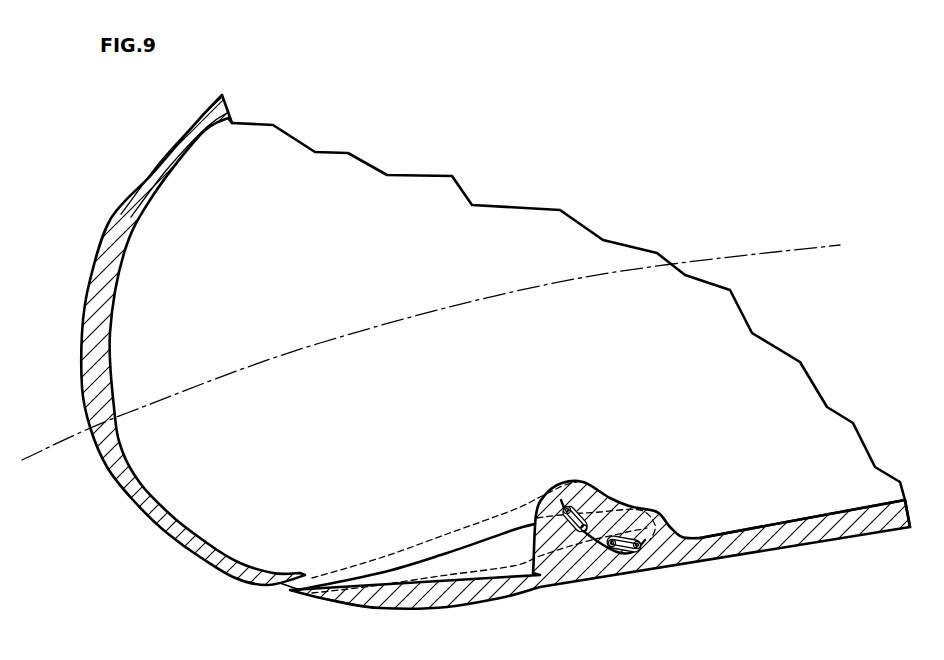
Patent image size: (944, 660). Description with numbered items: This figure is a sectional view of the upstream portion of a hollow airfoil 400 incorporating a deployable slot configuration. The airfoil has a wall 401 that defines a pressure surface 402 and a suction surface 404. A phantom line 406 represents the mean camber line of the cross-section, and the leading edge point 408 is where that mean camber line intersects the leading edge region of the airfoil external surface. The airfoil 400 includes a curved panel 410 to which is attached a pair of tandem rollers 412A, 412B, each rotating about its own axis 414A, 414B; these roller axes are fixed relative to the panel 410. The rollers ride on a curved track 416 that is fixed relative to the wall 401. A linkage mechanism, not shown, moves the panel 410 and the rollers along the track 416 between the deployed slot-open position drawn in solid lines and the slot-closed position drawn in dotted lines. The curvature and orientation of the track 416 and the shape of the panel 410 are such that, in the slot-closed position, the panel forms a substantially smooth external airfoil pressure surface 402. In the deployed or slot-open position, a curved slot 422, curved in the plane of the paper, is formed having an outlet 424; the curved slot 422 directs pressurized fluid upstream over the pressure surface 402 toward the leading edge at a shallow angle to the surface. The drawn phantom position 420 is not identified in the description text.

The hollow airfoil 400 is at (97, 200).
The wall 401 is at (857, 527).
The pressure surface 402 is at (800, 550).
The suction surface 404 is at (203, 108).
The phantom line 406 is at (448, 304).
The leading edge point 408 is at (90, 430).
The curved panel 410 is at (505, 555).
The tandem roller 412A is at (612, 553).
The tandem roller 412B is at (638, 549).
The roller axis 414A is at (627, 509).
The roller axis 414B is at (643, 540).
The curved track 416 is at (597, 540).
The alternate position of deflector 420 is at (382, 555).
The curved slot 422 is at (308, 589).
The outlet 424 is at (268, 590).